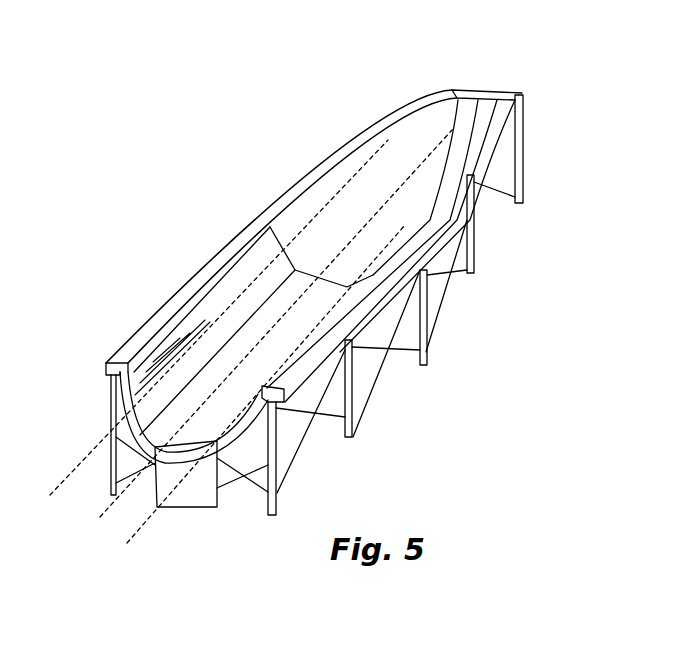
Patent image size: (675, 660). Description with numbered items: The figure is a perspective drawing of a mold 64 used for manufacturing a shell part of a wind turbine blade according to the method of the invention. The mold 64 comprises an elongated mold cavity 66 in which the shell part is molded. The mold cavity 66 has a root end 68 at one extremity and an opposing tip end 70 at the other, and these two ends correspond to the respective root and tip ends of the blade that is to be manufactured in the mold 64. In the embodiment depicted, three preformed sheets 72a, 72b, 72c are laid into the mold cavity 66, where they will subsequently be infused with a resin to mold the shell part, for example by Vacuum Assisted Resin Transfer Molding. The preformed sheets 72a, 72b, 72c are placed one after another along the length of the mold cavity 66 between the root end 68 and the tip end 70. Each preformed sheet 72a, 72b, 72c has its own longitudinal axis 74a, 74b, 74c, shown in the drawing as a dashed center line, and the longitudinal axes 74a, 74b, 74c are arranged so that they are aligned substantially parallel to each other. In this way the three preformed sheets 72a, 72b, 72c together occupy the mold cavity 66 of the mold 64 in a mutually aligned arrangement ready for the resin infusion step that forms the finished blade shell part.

The mold 64 is at (110, 162).
The mold cavity 66 is at (308, 205).
The root end 68 is at (232, 443).
The tip end 70 is at (483, 92).
The preformed sheet 72a is at (241, 282).
The preformed sheet 72b is at (200, 427).
The preformed sheet 72c is at (365, 284).
The longitudinal axis 74a is at (377, 152).
The longitudinal axis 74b is at (440, 143).
The longitudinal axis 74c is at (398, 247).